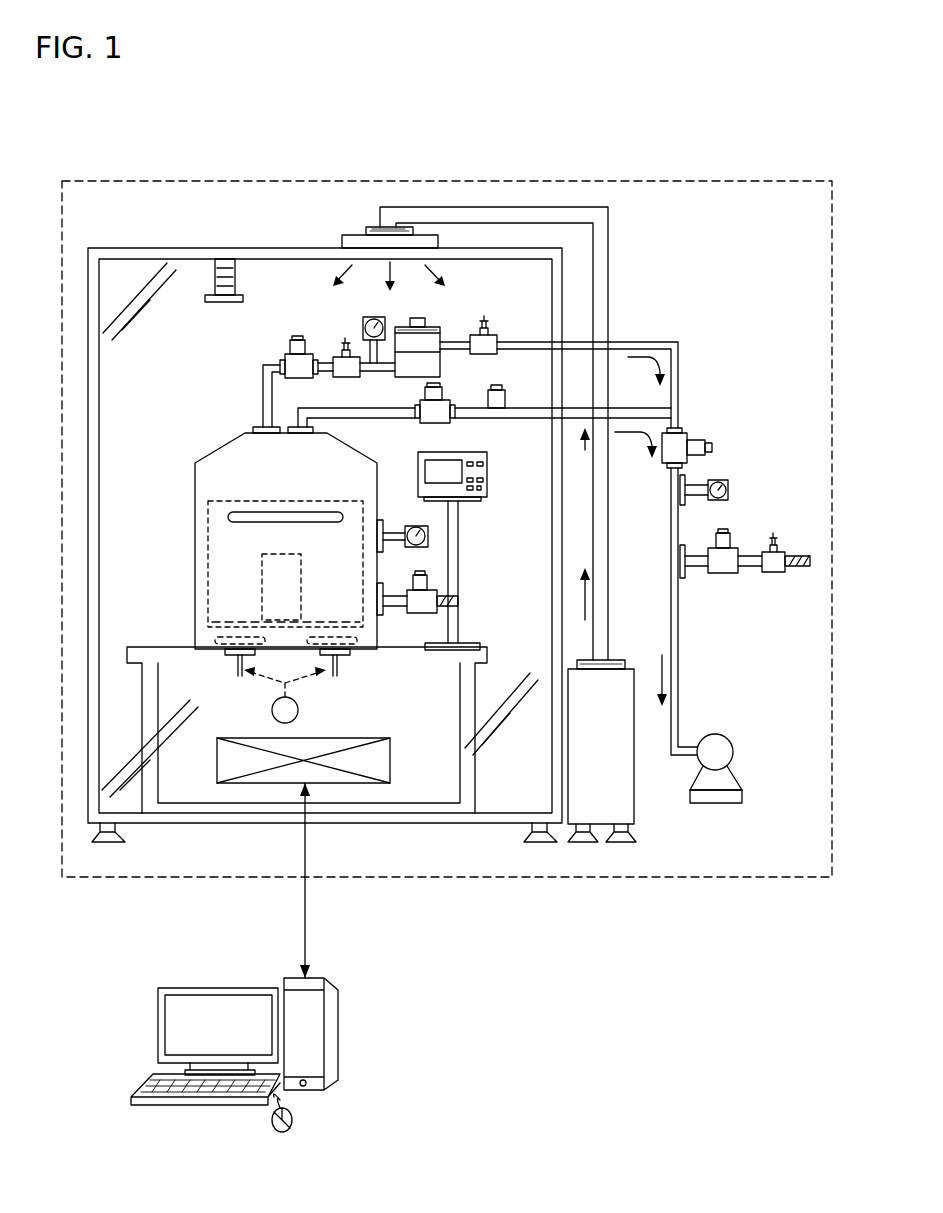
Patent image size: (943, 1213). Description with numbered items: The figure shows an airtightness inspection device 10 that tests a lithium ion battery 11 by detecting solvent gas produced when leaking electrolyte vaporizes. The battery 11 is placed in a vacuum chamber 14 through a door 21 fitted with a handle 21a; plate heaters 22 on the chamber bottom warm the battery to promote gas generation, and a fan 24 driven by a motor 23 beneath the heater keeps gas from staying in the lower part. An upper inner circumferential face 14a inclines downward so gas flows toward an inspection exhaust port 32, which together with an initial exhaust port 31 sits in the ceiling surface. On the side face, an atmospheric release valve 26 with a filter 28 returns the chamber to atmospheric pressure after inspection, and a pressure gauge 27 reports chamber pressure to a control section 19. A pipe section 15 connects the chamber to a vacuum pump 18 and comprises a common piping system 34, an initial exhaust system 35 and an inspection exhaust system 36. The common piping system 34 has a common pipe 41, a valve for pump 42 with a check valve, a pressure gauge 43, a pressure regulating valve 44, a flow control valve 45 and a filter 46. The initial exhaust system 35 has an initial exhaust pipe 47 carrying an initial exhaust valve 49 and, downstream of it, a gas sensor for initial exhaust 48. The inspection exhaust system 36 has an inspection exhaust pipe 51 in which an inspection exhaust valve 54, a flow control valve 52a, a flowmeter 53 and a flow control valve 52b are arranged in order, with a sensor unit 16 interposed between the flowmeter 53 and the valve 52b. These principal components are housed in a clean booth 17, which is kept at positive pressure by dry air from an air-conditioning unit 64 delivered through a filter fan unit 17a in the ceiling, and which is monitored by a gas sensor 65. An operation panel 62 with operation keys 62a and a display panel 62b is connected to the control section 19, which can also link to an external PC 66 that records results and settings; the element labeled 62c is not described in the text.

The airtightness inspection device 10 is at (667, 181).
The lithium ion battery 11 is at (300, 585).
The vacuum chamber 14 is at (195, 513).
The upper inner circumferential face 14a is at (222, 455).
The pipe section 15 is at (695, 347).
The sensor unit 16 is at (425, 327).
The clean booth 17 is at (160, 248).
The filter fan unit 17a is at (342, 240).
The vacuum pump 18 is at (733, 752).
The control section 19 is at (390, 760).
The door 21 is at (208, 563).
The handle 21a is at (290, 512).
The plate heater 22 is at (230, 622).
The motor 23 is at (298, 712).
The fan 24 is at (307, 725).
The atmospheric release valve 26 is at (420, 613).
The pressure gauge 27 is at (412, 526).
The filter 28 is at (452, 598).
The initial exhaust port 31 is at (312, 437).
The inspection exhaust port 32 is at (253, 430).
The common piping system 34 is at (700, 645).
The initial exhaust system 35 is at (597, 458).
The inspection exhaust system 36 is at (652, 330).
The common pipe 41 is at (680, 700).
The valve for pump 42 is at (685, 433).
The pressure gauge 43 is at (730, 490).
The pressure regulating valve 44 is at (725, 575).
The flow control valve 45 is at (775, 575).
The filter 46 is at (797, 552).
The initial exhaust pipe 47 is at (528, 408).
The gas sensor for initial exhaust 48 is at (485, 397).
The initial exhaust valve 49 is at (418, 403).
The inspection exhaust pipe 51 is at (625, 342).
The flow control valve 52a is at (338, 358).
The flow control valve 52b is at (488, 335).
The flowmeter 53 is at (364, 324).
The inspection exhaust valve 54 is at (285, 360).
The operation panel 62 is at (462, 503).
The operation keys 62a is at (475, 497).
The display panel 62b is at (452, 440).
The controller 62c is at (478, 452).
The air-conditioning unit 64 is at (634, 810).
The gas sensor 65 is at (215, 285).
The external PC 66 is at (338, 1030).